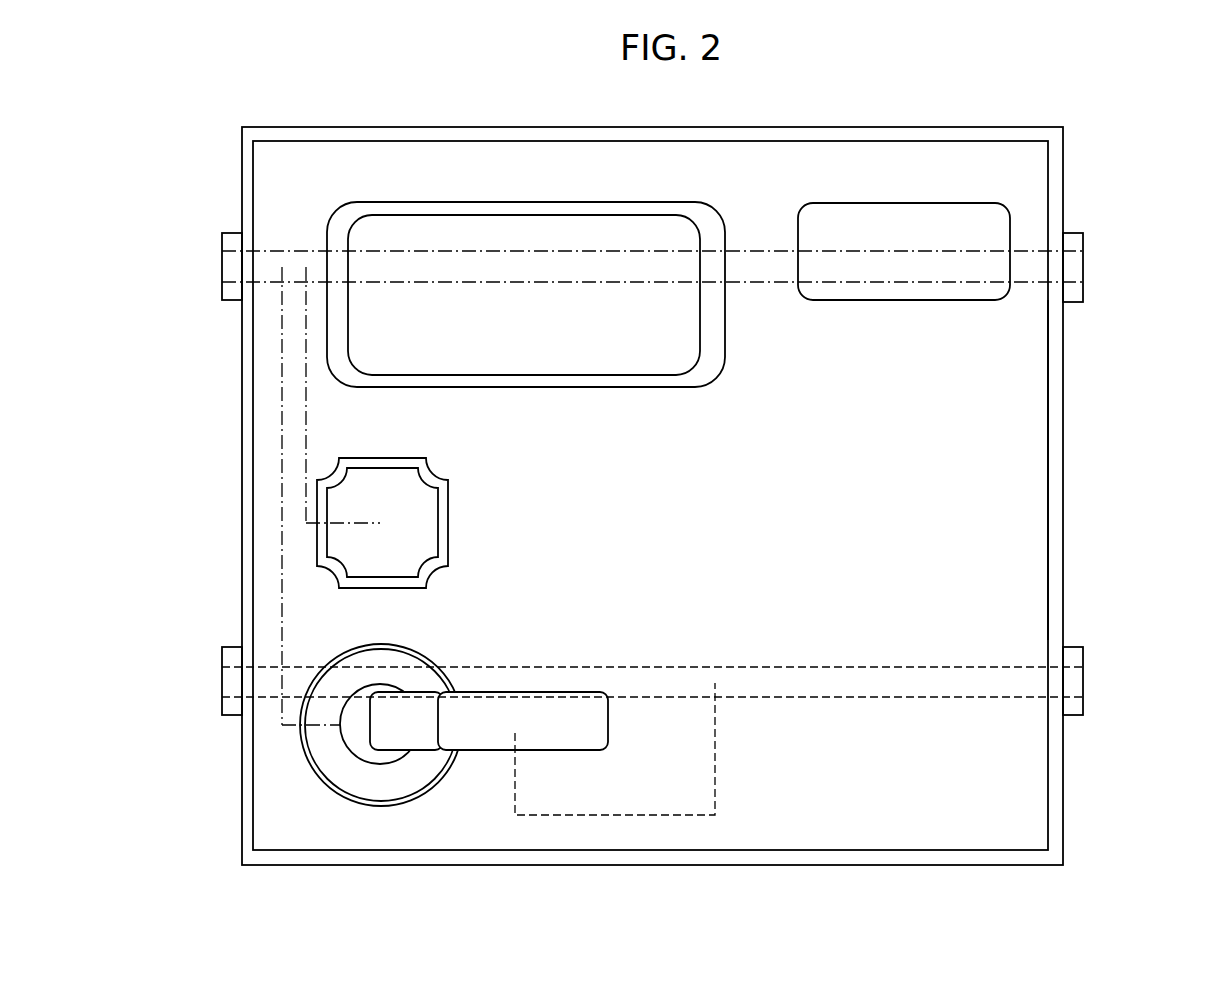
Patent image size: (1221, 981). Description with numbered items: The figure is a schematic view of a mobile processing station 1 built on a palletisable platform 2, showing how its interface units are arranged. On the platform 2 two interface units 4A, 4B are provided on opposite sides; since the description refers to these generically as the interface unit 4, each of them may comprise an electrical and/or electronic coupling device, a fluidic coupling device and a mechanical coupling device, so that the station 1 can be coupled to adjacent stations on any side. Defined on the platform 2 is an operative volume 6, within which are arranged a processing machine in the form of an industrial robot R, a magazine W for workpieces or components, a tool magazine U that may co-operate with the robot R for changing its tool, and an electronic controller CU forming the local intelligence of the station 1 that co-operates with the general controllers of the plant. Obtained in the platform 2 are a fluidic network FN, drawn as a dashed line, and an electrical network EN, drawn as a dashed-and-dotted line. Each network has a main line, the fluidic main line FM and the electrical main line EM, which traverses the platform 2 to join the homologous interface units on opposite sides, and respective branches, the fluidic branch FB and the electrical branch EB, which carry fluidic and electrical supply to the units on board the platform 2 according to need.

The mobile processing station 1 is at (1120, 151).
The palletisable platform 2 is at (875, 867).
The interface unit 4 is at (228, 263).
The interface unit 4A is at (162, 230).
The interface unit 4B is at (1142, 230).
The operative volume 6 is at (1051, 475).
The magazine W is at (570, 348).
The tool magazine U is at (412, 512).
The industrial robot R is at (399, 724).
The electrical branch EB is at (305, 518).
The electrical main line EM is at (760, 262).
The electrical network EN is at (760, 283).
The electronic controller CU is at (908, 218).
The fluidic network FN is at (813, 665).
The fluidic main line FM is at (873, 685).
The fluidic branch FB is at (715, 762).